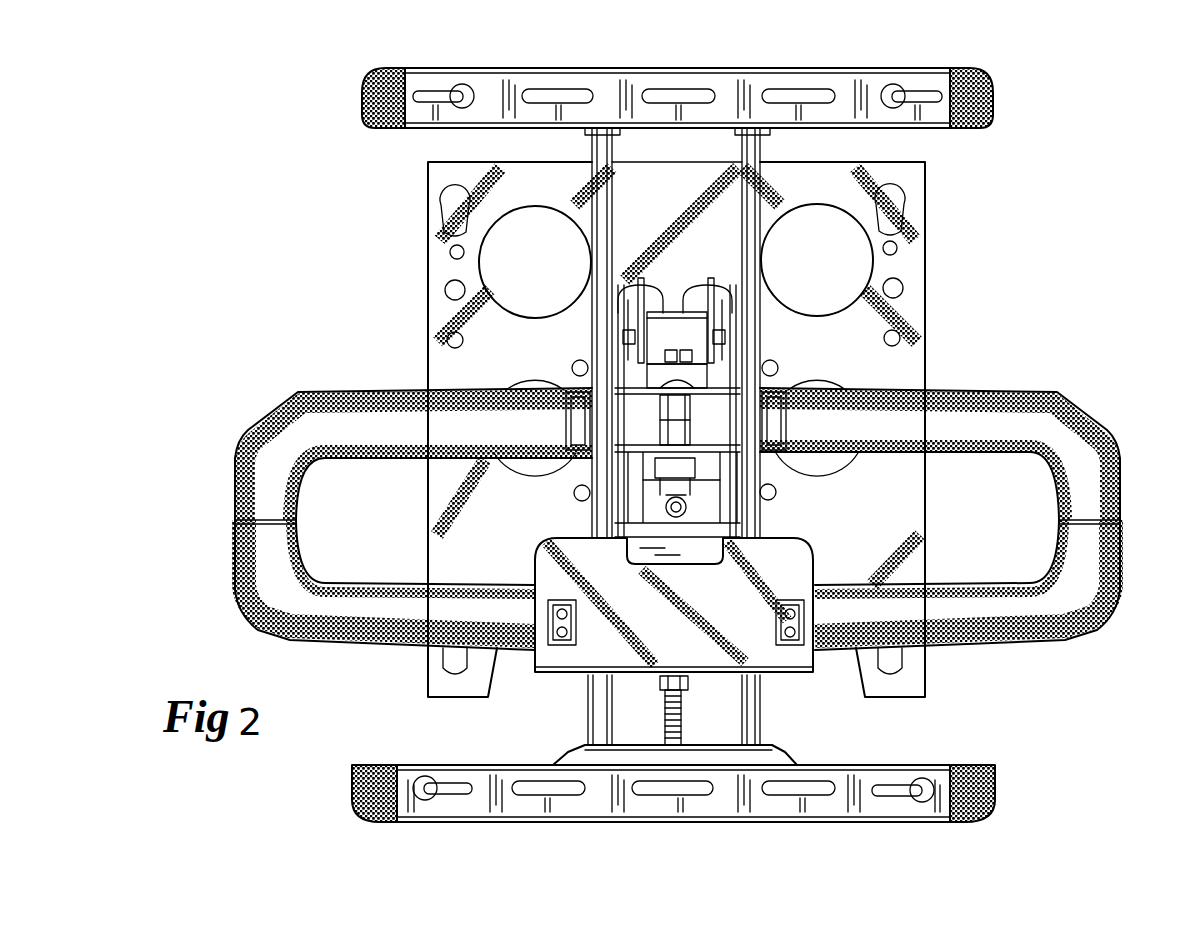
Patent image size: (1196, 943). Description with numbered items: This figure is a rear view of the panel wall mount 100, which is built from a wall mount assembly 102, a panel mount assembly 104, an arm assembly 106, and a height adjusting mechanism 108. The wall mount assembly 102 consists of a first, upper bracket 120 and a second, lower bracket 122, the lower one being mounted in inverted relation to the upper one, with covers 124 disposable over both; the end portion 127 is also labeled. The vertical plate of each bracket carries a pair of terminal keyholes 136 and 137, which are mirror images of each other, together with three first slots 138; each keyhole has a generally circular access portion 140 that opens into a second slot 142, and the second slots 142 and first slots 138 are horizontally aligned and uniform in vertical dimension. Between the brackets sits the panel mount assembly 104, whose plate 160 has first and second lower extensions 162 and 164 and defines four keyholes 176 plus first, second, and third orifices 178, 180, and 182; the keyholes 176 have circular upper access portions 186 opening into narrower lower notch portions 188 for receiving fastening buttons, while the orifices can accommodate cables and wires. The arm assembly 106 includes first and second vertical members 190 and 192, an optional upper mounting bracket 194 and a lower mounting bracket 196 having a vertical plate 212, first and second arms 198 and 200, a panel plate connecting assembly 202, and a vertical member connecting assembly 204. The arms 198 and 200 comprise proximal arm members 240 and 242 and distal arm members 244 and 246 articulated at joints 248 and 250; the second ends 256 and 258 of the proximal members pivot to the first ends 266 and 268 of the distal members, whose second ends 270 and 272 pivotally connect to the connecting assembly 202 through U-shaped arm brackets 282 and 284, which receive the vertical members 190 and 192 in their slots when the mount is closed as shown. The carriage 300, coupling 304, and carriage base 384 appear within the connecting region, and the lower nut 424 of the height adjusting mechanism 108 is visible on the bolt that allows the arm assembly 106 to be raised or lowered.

The panel wall mount 100 is at (1048, 82).
The wall mount assembly 102 is at (621, 58).
The panel mount assembly 104 is at (942, 296).
The arm assembly 106 is at (1070, 388).
The height adjusting mechanism 108 is at (655, 719).
The first bracket 120 is at (422, 80).
The second bracket 122 is at (418, 808).
The covers 124 is at (372, 98).
The end portion 127 is at (906, 808).
The terminal keyhole 136 is at (883, 85).
The terminal keyhole 137 is at (470, 82).
The first slots 138 is at (545, 87).
The access portions 140 is at (470, 84).
The second slots 142 is at (437, 88).
The plate 160 is at (512, 545).
The first lower extension 162 is at (928, 688).
The second lower extension 164 is at (492, 695).
The keyholes 176 is at (455, 196).
The first orifices 178 is at (458, 282).
The second orifices 180 is at (628, 285).
The third orifices 182 is at (526, 206).
The upper access portions 186 is at (445, 200).
The lower notch portions 188 is at (450, 228).
The first vertical member 190 is at (762, 154).
The second vertical member 192 is at (620, 154).
The first upper mounting bracket 194 is at (745, 66).
The second lower mounting bracket 196 is at (785, 757).
The first arm 198 is at (1120, 488).
The second arm 200 is at (235, 488).
The panel plate connecting assembly 202 is at (676, 305).
The vertical member connecting assembly 204 is at (734, 606).
The vertical plate 212 is at (718, 760).
The proximal arm member 240 is at (1045, 642).
The proximal arm member 242 is at (312, 639).
The distal arm member 244 is at (1002, 390).
The distal arm member 246 is at (325, 390).
The joint 248 is at (1120, 524).
The joint 250 is at (235, 522).
The second end 256 is at (1090, 542).
The second end 258 is at (255, 540).
The first end 266 is at (1120, 512).
The first end 268 is at (235, 508).
The second end 270 is at (795, 395).
The second end 272 is at (560, 400).
The arm bracket 282 is at (817, 428).
The arm bracket 284 is at (535, 428).
The carriage 300 is at (677, 338).
The coupling 304 is at (681, 487).
The carriage base 384 is at (677, 376).
The lower nut 424 is at (690, 683).